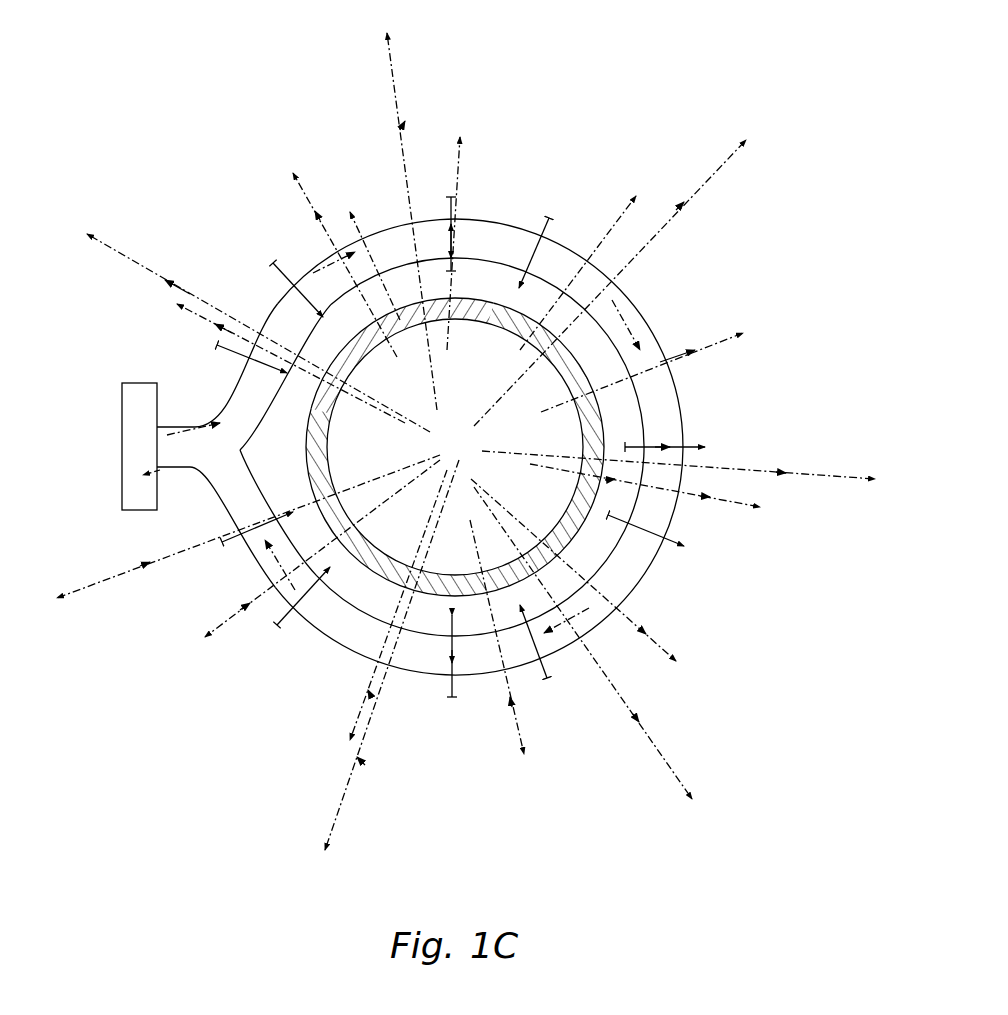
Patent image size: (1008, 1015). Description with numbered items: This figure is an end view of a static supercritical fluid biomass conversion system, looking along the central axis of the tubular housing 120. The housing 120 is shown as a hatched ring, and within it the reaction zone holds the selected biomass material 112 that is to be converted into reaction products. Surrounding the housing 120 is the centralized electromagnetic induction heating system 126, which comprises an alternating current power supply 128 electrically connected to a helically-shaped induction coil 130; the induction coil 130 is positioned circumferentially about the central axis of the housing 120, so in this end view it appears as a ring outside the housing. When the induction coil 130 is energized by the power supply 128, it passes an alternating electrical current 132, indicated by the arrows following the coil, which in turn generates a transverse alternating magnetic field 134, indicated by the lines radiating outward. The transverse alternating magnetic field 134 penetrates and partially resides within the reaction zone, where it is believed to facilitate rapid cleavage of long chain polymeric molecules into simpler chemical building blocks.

The biomass material 112 is at (585, 500).
The housing 120 is at (603, 422).
The centralized electromagnetic induction heating system 126 is at (112, 418).
The alternating current power supply 128 is at (138, 490).
The induction coil 130 is at (474, 677).
The alternating electrical current 132 is at (317, 275).
The transverse alternating magnetic field 134 is at (648, 255).